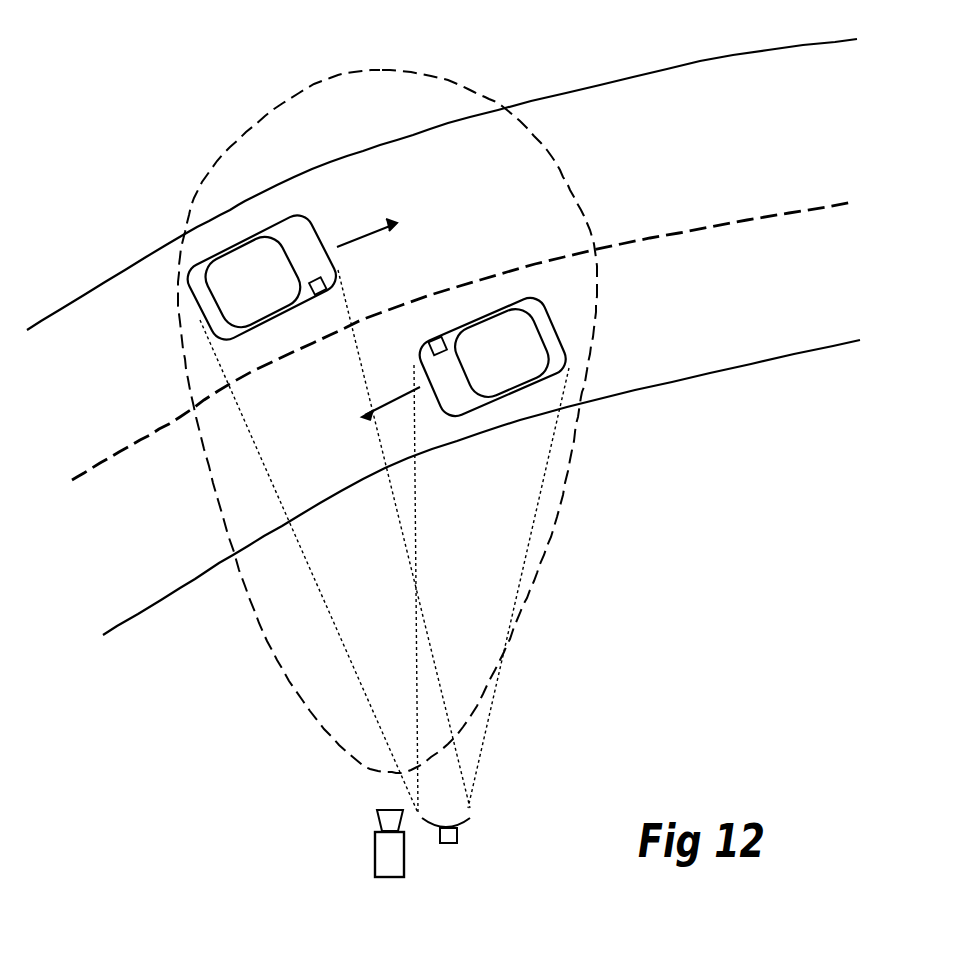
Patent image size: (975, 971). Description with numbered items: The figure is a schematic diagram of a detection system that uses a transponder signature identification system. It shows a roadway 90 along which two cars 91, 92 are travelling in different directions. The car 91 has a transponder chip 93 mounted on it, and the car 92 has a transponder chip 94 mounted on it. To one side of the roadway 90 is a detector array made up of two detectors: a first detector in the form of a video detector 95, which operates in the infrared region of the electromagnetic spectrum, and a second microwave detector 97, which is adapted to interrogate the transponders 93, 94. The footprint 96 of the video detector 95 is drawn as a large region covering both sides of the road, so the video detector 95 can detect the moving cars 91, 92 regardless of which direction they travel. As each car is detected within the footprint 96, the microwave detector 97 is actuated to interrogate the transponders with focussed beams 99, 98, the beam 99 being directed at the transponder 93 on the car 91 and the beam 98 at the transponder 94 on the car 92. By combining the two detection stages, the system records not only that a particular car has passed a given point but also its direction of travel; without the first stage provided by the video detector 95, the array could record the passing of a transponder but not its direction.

The roadway 90 is at (675, 348).
The car 91 is at (243, 263).
The car 92 is at (517, 373).
The transponder chip 93 is at (317, 295).
The transponder chip 94 is at (437, 340).
The video detector 95 is at (390, 853).
The footprint 96 is at (440, 78).
The microwave detector 97 is at (455, 838).
The focussed beam 98 is at (490, 713).
The focussed beam 99 is at (367, 695).